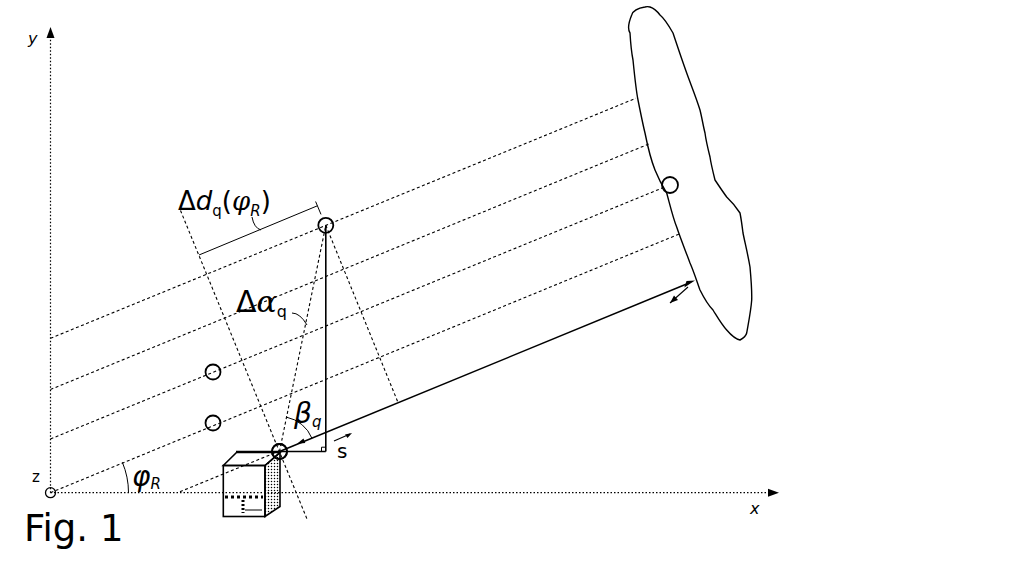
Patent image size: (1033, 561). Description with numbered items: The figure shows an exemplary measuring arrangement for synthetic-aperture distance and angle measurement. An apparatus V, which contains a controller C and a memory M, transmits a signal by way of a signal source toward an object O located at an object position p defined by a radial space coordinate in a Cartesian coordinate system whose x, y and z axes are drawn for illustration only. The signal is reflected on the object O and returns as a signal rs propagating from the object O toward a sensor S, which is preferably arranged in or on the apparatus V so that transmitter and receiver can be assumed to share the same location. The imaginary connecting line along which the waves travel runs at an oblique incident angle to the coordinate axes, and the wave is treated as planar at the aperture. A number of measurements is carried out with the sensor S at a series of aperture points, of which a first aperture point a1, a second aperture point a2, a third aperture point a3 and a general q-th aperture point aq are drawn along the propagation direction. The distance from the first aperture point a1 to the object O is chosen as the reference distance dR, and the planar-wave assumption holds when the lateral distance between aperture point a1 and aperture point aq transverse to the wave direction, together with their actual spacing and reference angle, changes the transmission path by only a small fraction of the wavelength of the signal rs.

The sensor S is at (272, 446).
The apparatus V is at (223, 465).
The controller C is at (228, 508).
The memory M is at (262, 510).
The object O is at (657, 177).
The object position p is at (662, 195).
The signal coming from object rs is at (683, 302).
The reference distance dR is at (507, 357).
The first aperture point a1 is at (316, 455).
The second aperture point a2 is at (208, 416).
The third aperture point a3 is at (208, 364).
The q-th aperture point aq is at (360, 198).